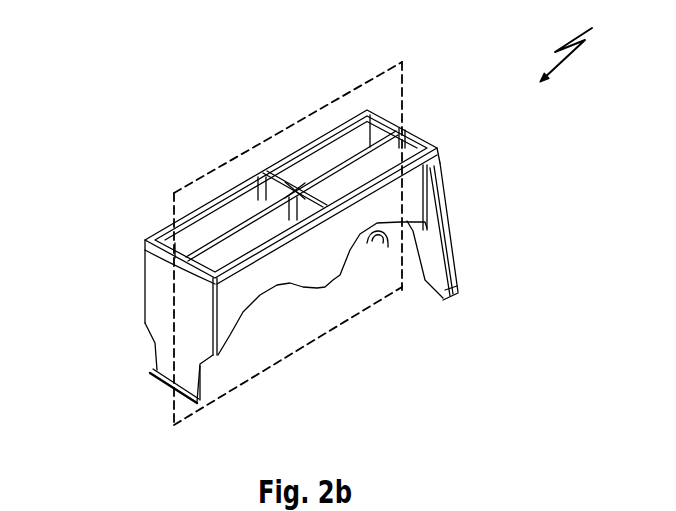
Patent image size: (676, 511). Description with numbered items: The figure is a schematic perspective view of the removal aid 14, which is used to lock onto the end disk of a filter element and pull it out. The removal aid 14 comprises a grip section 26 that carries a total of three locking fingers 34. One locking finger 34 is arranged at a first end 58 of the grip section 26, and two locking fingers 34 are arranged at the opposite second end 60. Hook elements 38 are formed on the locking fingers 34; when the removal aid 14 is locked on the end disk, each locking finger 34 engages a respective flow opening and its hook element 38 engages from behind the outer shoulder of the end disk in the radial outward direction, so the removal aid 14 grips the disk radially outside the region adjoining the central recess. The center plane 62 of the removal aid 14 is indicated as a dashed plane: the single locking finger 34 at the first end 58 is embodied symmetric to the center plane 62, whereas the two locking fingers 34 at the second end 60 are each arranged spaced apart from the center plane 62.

The removal aid 14 is at (578, 45).
The grip section 26 is at (310, 258).
The locking fingers 34 is at (163, 362).
The hook elements 38 is at (202, 402).
The first end 58 is at (154, 295).
The second end 60 is at (433, 123).
The center plane 62 is at (270, 140).